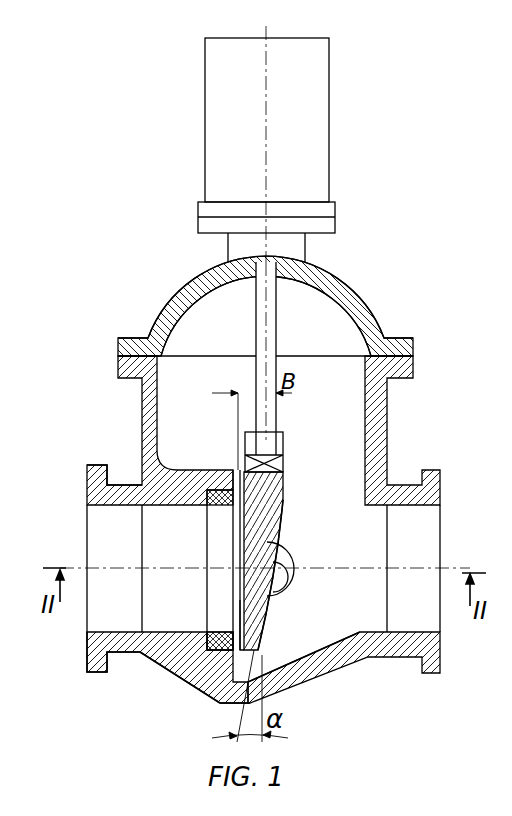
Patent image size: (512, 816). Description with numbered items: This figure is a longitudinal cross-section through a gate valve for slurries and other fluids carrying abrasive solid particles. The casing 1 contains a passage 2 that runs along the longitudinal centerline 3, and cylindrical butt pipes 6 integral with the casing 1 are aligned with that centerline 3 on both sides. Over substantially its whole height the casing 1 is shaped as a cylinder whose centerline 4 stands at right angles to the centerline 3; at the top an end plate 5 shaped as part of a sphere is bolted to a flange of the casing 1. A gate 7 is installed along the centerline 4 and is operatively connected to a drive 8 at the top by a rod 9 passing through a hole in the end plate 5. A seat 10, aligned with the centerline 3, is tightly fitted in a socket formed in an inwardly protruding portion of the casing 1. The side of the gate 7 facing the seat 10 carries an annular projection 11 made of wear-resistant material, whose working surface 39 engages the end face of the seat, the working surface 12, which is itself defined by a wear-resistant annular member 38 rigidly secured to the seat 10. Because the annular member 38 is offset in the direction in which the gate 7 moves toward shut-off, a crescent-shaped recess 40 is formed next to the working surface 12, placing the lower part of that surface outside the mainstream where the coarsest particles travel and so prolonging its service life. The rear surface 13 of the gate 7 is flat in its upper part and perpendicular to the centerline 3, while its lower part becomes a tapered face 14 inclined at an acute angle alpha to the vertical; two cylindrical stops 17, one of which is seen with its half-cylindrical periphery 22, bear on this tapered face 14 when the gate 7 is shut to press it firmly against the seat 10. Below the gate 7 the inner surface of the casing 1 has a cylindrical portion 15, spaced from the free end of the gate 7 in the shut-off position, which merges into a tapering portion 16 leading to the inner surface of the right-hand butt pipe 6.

The casing 1 is at (149, 421).
The passage 2 is at (158, 622).
The longitudinal centerline 3 is at (100, 568).
The centerline 4 is at (268, 707).
The end plate 5 is at (182, 322).
The cylindrical butt pipes 6 is at (128, 484).
The gate 7 is at (272, 500).
The drive 8 is at (318, 141).
The rod 9 is at (284, 313).
The seat 10 is at (208, 637).
The annular projection 11 is at (238, 480).
The working surface 12 is at (262, 638).
The surface 13 is at (283, 478).
The tapered face 14 is at (280, 524).
The cylindrical portion 15 is at (228, 706).
The tapering portion 16 is at (336, 645).
The cylindrical stops 17 is at (286, 582).
The periphery 22 is at (297, 562).
The annular member 38 is at (207, 675).
The working surface 39 is at (228, 492).
The crescent-shaped recess 40 is at (225, 633).